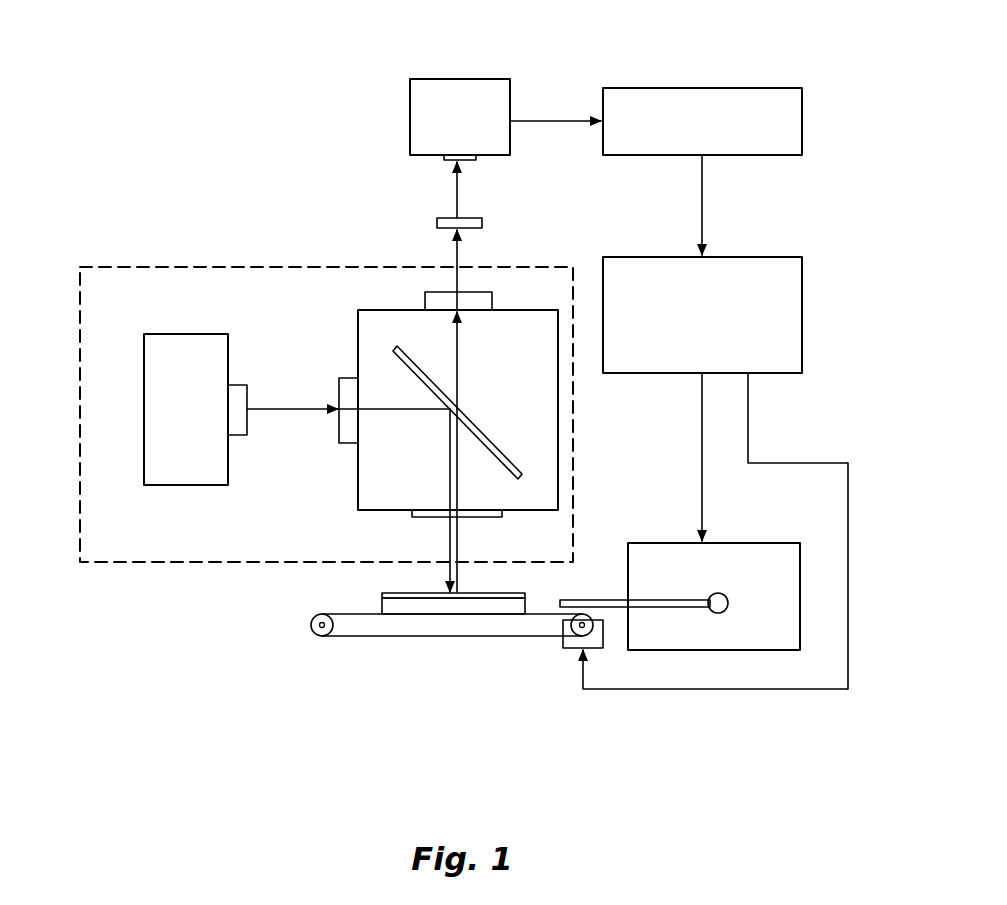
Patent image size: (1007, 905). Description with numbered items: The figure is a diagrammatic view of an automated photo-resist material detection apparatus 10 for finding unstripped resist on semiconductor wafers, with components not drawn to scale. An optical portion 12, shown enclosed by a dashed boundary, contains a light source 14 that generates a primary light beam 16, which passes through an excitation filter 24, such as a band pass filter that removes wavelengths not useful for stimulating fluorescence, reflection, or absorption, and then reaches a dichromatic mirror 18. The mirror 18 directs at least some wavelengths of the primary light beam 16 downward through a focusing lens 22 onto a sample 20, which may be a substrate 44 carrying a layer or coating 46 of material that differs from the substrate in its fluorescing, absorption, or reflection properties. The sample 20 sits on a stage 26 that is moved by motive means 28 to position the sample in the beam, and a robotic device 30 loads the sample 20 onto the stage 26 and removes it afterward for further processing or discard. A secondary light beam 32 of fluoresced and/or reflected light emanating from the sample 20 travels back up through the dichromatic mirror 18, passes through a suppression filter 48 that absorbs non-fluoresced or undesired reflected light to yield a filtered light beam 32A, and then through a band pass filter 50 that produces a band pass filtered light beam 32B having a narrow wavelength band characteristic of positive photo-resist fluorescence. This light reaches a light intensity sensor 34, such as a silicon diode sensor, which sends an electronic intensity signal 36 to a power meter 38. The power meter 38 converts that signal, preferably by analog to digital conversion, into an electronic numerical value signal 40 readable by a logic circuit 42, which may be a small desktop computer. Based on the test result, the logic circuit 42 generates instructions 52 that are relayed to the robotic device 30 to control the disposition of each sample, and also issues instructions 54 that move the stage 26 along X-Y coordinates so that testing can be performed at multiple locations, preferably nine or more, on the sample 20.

The automated photo-resist material detection apparatus 10 is at (184, 147).
The optical portion 12 is at (137, 267).
The light source 14 is at (142, 457).
The primary light beam 16 is at (305, 408).
The dichromatic mirror 18 is at (398, 358).
The sample 20 is at (340, 717).
The focusing lens 22 is at (412, 517).
The excitation filter 24 is at (340, 433).
The stage 26 is at (343, 617).
The motive means 28 is at (572, 641).
The robotic device 30 is at (800, 606).
The secondary light beam 32 is at (458, 358).
The filtered light beam 32A is at (458, 262).
The band pass filtered light beam 32B is at (461, 197).
The light intensity sensor 34 is at (425, 79).
The electronic intensity signal 36 is at (540, 121).
The power meter 38 is at (802, 132).
The electronic numerical value signal 40 is at (702, 195).
The logic circuit 42 is at (802, 333).
The substrate 44 is at (430, 608).
The coating 46 is at (403, 599).
The suppression filter 48 is at (442, 298).
The band pass filter 50 is at (440, 223).
The instructions 52 is at (702, 467).
The instructions 54 is at (765, 689).